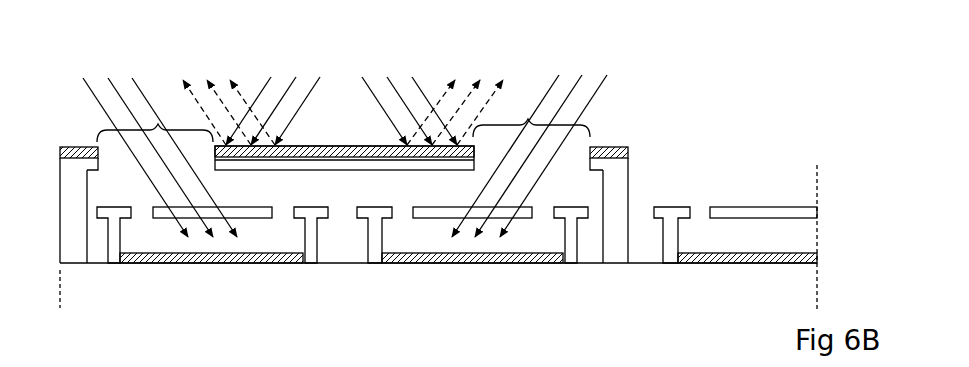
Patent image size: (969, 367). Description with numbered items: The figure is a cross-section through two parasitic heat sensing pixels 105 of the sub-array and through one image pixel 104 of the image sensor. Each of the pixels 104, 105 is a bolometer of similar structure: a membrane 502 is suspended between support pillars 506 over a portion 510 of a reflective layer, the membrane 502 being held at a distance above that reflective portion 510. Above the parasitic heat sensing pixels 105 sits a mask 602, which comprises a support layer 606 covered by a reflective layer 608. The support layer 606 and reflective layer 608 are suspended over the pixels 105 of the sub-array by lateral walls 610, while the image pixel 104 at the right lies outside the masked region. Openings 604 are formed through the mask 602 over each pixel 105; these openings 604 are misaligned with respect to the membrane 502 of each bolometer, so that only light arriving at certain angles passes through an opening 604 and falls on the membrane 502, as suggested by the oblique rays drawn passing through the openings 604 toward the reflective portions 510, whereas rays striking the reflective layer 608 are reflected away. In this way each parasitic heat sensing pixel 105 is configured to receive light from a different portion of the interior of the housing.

The image pixel 104 is at (745, 155).
The parasitic heat sensing pixel 105 is at (195, 63).
The membrane 502 is at (250, 213).
The support pillars 506 is at (112, 213).
The portion of a reflective layer 510 is at (207, 257).
The mask 602 is at (323, 141).
The openings 604 is at (158, 124).
The support layer 606 is at (347, 170).
The reflective layer 608 is at (77, 153).
The lateral walls 610 is at (72, 248).